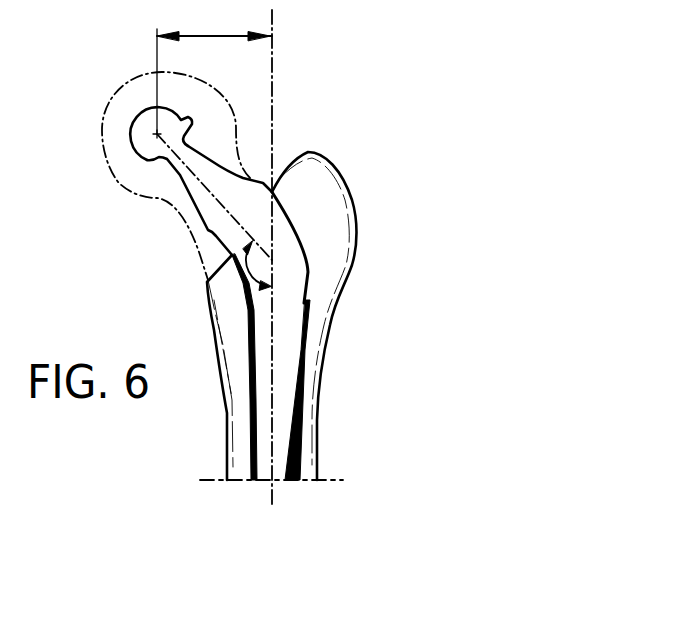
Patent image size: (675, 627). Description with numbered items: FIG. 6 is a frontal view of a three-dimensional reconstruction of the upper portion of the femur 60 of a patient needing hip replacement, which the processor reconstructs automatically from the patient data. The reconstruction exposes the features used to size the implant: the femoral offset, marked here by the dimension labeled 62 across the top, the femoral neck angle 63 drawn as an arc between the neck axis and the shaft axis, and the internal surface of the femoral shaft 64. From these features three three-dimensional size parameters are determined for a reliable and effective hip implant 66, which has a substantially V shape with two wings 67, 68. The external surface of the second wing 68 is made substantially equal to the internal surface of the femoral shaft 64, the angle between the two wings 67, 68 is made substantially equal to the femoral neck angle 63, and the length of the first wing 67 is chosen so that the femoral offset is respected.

The femur 60 is at (172, 468).
The femoral offset 62 is at (214, 71).
The femoral neck angle 63 is at (248, 272).
The femoral shaft 64 is at (238, 408).
The hip implant 66 is at (287, 292).
The first wing 67 is at (215, 175).
The second wing 68 is at (282, 397).